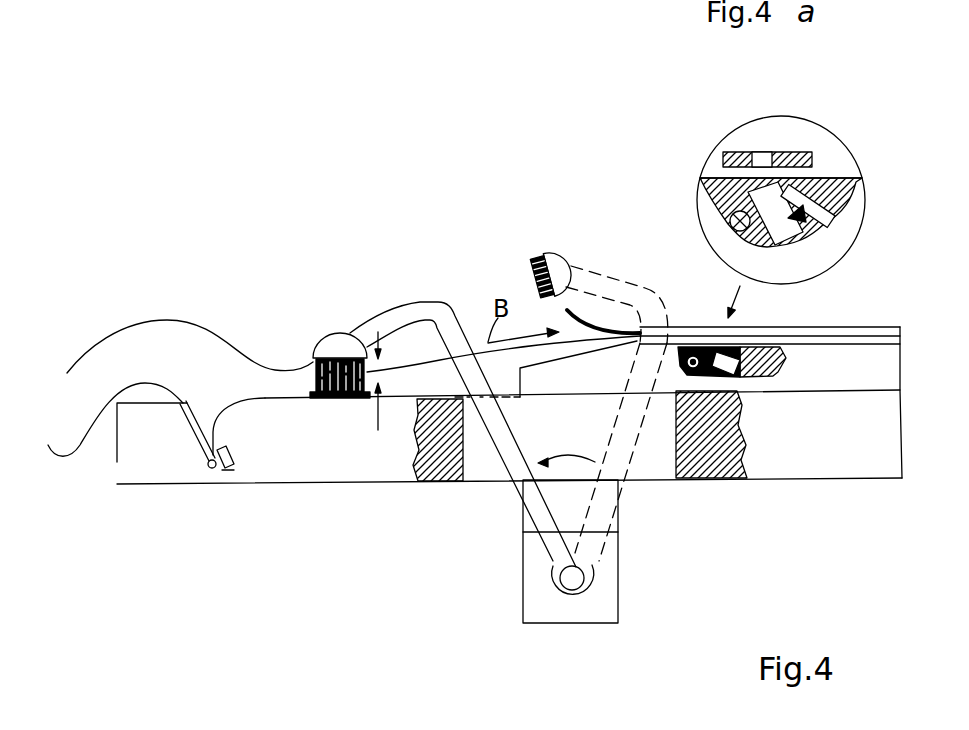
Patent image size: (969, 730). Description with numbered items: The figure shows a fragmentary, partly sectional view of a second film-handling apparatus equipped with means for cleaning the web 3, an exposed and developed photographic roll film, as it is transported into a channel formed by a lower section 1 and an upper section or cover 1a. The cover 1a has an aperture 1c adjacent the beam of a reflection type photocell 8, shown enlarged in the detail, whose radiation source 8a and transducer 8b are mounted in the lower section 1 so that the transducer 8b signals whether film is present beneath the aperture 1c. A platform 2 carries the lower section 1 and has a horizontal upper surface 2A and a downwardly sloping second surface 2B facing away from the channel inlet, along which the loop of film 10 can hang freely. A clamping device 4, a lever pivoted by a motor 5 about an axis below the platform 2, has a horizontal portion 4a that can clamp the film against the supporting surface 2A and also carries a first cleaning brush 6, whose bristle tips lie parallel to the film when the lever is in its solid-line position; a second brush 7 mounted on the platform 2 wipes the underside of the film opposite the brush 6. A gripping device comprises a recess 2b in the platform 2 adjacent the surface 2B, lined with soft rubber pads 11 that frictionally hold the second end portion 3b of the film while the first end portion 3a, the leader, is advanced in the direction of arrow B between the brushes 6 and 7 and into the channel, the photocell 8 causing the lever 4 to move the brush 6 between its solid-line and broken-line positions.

In FIG. 4, the lower section 1 is at (870, 353).
In FIG. 4, the upper section or cover 1a is at (803, 327).
In FIG. 4A, the upper section or cover 1a is at (803, 157).
In FIG. 4, the aperture 1c is at (710, 337).
In FIG. 4A, the aperture 1c is at (770, 157).
In FIG. 4, the platform 2 is at (265, 392).
In FIG. 4, the upper surface 2A is at (283, 400).
In FIG. 4, the second surface 2B is at (117, 462).
In FIG. 4, the recess 2b is at (210, 470).
In FIG. 4, the web 3 is at (393, 498).
In FIG. 4, the first end portion 3a is at (645, 330).
In FIG. 4, the second end portion 3b is at (211, 468).
In FIG. 4, the clamping device 4 is at (450, 300).
In FIG. 4, the horizontal portion 4a is at (603, 519).
In FIG. 4, the motor 5 is at (605, 563).
In FIG. 4, the brush 6 is at (320, 347).
In FIG. 4, the second brush 7 is at (337, 398).
In FIG. 4A, the photocell 8 is at (702, 155).
In FIG. 4A, the radiation source 8a is at (720, 233).
In FIG. 4A, the transducer 8b is at (840, 235).
In FIG. 4, the advancing roll 10 is at (88, 347).
In FIG. 4, the pads 11 is at (193, 424).